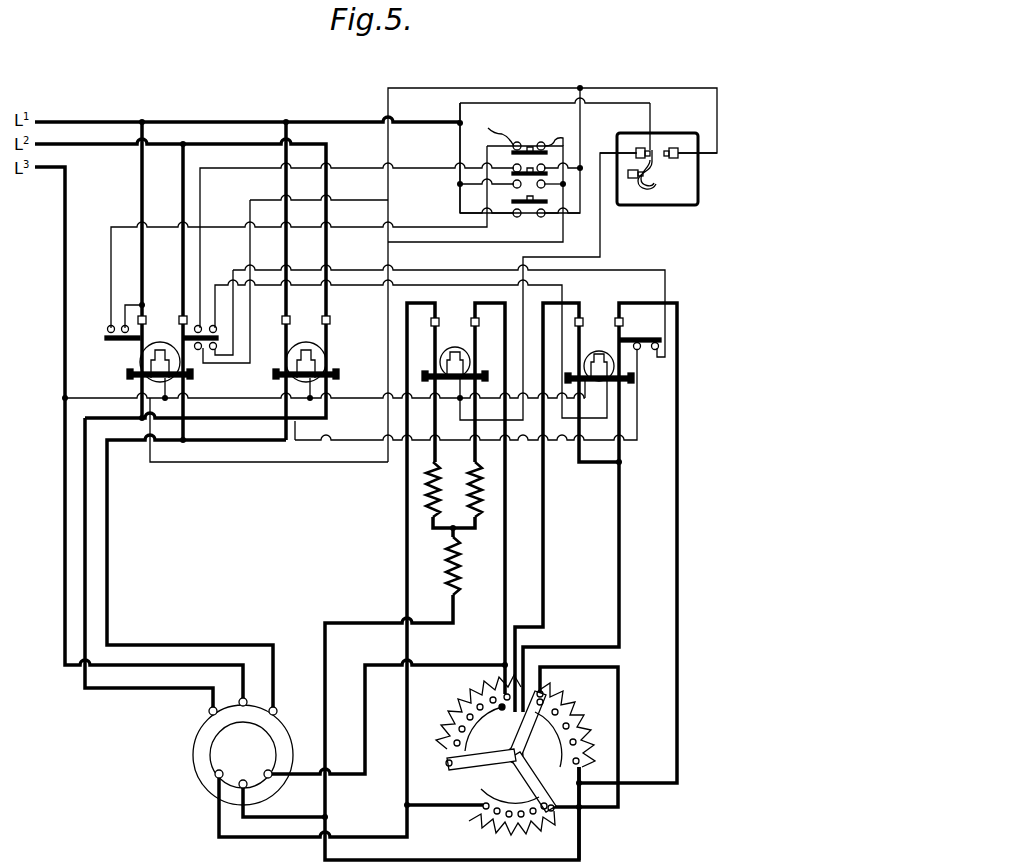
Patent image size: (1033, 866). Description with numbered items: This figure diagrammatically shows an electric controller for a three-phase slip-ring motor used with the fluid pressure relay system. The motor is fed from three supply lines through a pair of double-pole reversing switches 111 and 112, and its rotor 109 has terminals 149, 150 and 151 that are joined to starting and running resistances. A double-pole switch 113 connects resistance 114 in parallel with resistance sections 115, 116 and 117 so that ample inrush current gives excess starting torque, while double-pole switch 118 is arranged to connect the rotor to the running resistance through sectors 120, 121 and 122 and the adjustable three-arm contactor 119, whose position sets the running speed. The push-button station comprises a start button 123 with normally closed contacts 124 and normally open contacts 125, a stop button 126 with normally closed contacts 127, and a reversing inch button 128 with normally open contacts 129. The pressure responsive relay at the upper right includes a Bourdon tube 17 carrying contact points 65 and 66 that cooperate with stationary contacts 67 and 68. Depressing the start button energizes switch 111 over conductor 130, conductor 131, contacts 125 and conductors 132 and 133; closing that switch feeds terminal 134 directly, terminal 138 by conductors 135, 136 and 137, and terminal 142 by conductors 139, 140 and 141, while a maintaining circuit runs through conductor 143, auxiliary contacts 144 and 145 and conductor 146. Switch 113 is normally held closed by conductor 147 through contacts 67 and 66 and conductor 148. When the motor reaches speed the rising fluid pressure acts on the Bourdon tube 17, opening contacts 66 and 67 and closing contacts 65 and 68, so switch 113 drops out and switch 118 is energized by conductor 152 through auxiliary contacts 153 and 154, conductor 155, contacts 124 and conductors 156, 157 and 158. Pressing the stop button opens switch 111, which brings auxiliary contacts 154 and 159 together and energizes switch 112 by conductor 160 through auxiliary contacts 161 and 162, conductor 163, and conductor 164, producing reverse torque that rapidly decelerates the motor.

The Bourdon tube 17 is at (658, 168).
The contact point 65 is at (652, 160).
The contact point 66 is at (662, 178).
The stationary contact 67 is at (643, 148).
The stationary contact 68 is at (673, 151).
The rotor 109 is at (196, 774).
The double-pole reversing switch 111 is at (140, 360).
The double-pole reversing switch 112 is at (327, 356).
The double-pole switch 113 is at (450, 348).
The resistance 114 is at (456, 535).
The resistance section 115 is at (434, 722).
The resistance section 116 is at (584, 709).
The resistance section 117 is at (508, 836).
The double-pole switch 118 is at (597, 350).
The three-arm contactor 119 is at (524, 757).
The sector 120 is at (477, 731).
The sector 121 is at (561, 740).
The sector 122 is at (500, 790).
The start button 123 is at (514, 168).
The normally closed contacts 124 is at (536, 161).
The normally open contacts 125 is at (531, 189).
The stop button 126 is at (557, 137).
The normally closed contacts 127 is at (539, 133).
The reversing inch button 128 is at (512, 200).
The normally open contacts 129 is at (530, 217).
The conductor 130 is at (102, 396).
The conductor 131 is at (183, 465).
The conductor 132 is at (472, 183).
The conductor 133 is at (460, 154).
The terminal 134 is at (257, 691).
The conductor 135 is at (186, 166).
The conductor 136 is at (186, 383).
The conductor 137 is at (108, 529).
The terminal 138 is at (276, 708).
The conductor 139 is at (144, 208).
The conductor 140 is at (141, 409).
The conductor 141 is at (88, 449).
The terminal 142 is at (214, 706).
The conductor 143 is at (500, 135).
The auxiliary contact 144 is at (114, 322).
The auxiliary contact 145 is at (107, 339).
The conductor 146 is at (124, 306).
The conductor 147 is at (457, 422).
The conductor 148 is at (650, 115).
The terminal 149 is at (208, 787).
The terminal 150 is at (277, 789).
The terminal 151 is at (274, 782).
The conductor 152 is at (607, 425).
The auxiliary contact 153 is at (213, 295).
The auxiliary contact 154 is at (220, 338).
The conductor 155 is at (200, 258).
The conductor 156 is at (580, 166).
The conductor 157 is at (580, 128).
The conductor 158 is at (650, 88).
The auxiliary contact 159 is at (214, 326).
The conductor 160 is at (362, 427).
The auxiliary contact 161 is at (642, 350).
The auxiliary contact 162 is at (662, 335).
The conductor 163 is at (665, 292).
The conductor 164 is at (250, 363).